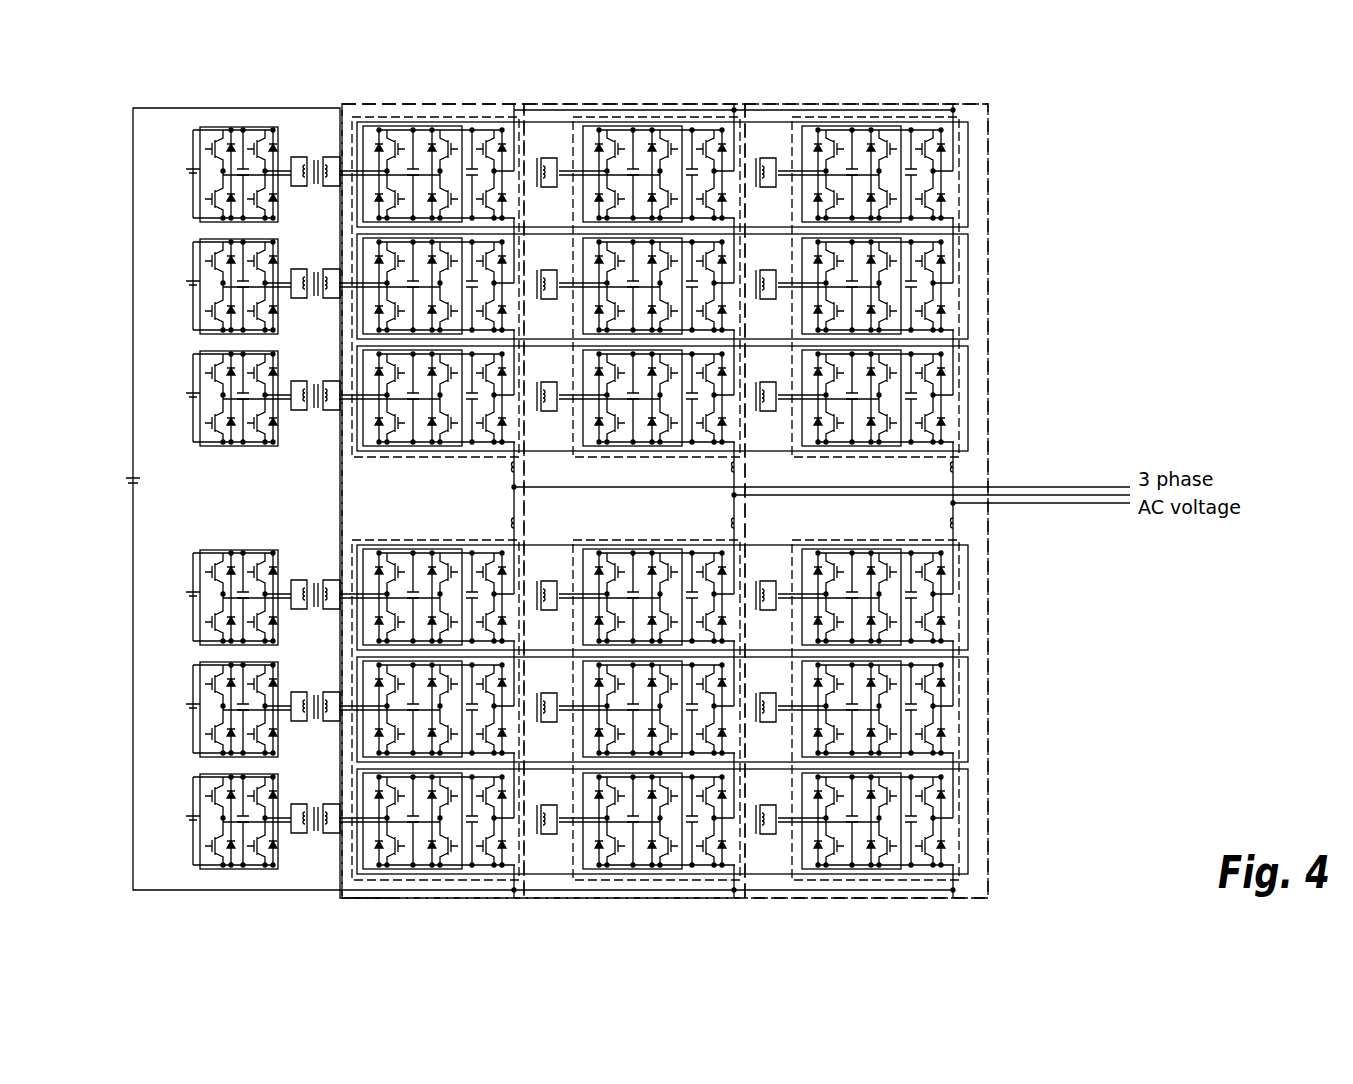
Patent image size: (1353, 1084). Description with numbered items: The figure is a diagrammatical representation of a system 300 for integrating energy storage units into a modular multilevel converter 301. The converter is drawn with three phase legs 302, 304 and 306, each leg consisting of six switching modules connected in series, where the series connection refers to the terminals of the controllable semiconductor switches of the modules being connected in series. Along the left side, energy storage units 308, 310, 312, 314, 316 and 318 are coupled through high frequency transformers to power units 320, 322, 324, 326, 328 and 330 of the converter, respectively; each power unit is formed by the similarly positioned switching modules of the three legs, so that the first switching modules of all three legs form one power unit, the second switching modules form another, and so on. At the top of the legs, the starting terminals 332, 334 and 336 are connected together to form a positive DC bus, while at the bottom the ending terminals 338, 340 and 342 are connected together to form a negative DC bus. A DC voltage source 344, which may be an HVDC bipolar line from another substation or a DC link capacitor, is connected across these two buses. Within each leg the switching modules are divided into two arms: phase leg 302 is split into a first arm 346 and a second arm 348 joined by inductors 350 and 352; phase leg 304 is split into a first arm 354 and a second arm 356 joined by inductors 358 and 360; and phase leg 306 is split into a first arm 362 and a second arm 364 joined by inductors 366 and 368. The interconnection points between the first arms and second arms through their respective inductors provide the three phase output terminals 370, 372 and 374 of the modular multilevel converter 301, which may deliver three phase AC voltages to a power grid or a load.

The system 300 is at (151, 95).
The modular multilevel converter 301 is at (342, 104).
The phase leg 302 is at (514, 133).
The phase leg 304 is at (734, 133).
The phase leg 306 is at (953, 133).
The energy storage unit 308 is at (193, 172).
The energy storage unit 310 is at (193, 284).
The energy storage unit 312 is at (193, 396).
The energy storage unit 314 is at (193, 595).
The energy storage unit 316 is at (193, 707).
The energy storage unit 318 is at (193, 819).
The power unit 320 is at (968, 172).
The power unit 322 is at (968, 274).
The power unit 324 is at (968, 386).
The power unit 326 is at (968, 584).
The power unit 328 is at (968, 697).
The power unit 330 is at (968, 809).
The starting terminal 332 is at (514, 104).
The starting terminal 334 is at (734, 104).
The starting terminal 336 is at (953, 104).
The ending terminal 338 is at (514, 898).
The ending terminal 340 is at (734, 898).
The ending terminal 342 is at (953, 898).
The DC voltage source 344 is at (128, 482).
The first arm 346 is at (424, 457).
The second arm 348 is at (432, 540).
The inductor 350 is at (514, 468).
The inductor 352 is at (514, 523).
The first arm 354 is at (640, 457).
The second arm 356 is at (655, 540).
The inductor 358 is at (734, 468).
The inductor 360 is at (734, 523).
The first arm 362 is at (856, 457).
The second arm 364 is at (872, 540).
The inductor 366 is at (953, 468).
The inductor 368 is at (953, 523).
The three phase output terminal 370 is at (514, 490).
The three phase output terminal 372 is at (734, 494).
The three phase output terminal 374 is at (953, 502).